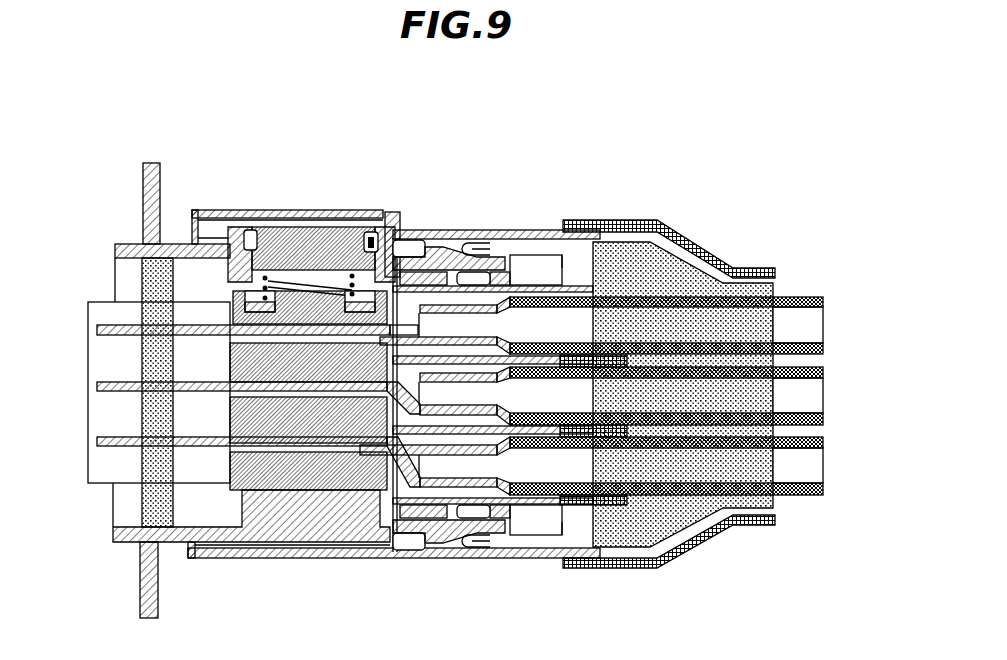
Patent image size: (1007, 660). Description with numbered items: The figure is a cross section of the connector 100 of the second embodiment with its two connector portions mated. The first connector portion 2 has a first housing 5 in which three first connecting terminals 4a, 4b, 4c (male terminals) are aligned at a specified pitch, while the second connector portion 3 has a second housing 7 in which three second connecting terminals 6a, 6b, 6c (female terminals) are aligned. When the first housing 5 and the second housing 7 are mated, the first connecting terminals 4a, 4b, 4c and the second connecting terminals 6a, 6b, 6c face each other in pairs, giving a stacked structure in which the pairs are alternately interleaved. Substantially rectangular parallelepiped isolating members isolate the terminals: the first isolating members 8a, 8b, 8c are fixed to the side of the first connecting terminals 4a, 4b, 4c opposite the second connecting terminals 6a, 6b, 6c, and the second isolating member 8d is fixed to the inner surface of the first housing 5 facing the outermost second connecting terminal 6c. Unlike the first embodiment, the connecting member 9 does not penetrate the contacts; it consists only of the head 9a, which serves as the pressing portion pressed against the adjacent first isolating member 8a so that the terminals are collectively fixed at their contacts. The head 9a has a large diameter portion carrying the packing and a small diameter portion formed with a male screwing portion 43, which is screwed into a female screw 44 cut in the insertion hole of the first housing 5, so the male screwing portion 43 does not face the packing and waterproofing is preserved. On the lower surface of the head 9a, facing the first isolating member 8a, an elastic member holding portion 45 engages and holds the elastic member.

The connector 100 is at (182, 116).
The first connector portion 2 is at (128, 241).
The second connector portion 3 is at (534, 224).
The first connecting terminal 4a is at (108, 326).
The first connecting terminal 4b is at (108, 383).
The first connecting terminal 4c is at (108, 438).
The first housing 5 is at (167, 243).
The second connecting terminal 6a is at (402, 333).
The second connecting terminal 6b is at (415, 385).
The second connecting terminal 6c is at (452, 457).
The second housing 7 is at (453, 230).
The first isolating member 8a is at (232, 293).
The first isolating member 8b is at (232, 353).
The first isolating member 8c is at (232, 417).
The second isolating member 8d is at (232, 473).
The connecting member 9 is at (268, 227).
The head 9a is at (275, 229).
The male screwing portion 43 is at (386, 230).
The female screw 44 is at (370, 250).
The elastic member holding portion 45 is at (343, 232).